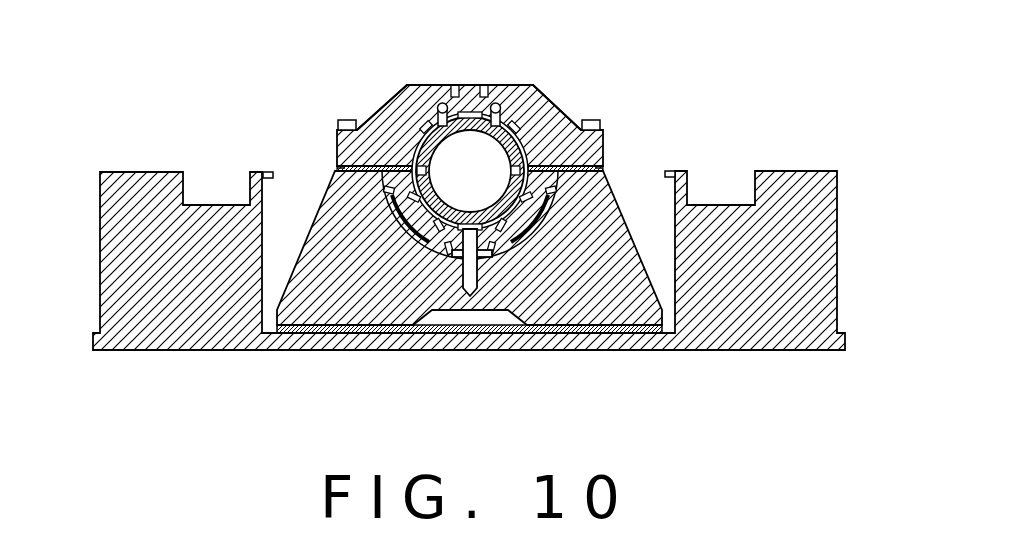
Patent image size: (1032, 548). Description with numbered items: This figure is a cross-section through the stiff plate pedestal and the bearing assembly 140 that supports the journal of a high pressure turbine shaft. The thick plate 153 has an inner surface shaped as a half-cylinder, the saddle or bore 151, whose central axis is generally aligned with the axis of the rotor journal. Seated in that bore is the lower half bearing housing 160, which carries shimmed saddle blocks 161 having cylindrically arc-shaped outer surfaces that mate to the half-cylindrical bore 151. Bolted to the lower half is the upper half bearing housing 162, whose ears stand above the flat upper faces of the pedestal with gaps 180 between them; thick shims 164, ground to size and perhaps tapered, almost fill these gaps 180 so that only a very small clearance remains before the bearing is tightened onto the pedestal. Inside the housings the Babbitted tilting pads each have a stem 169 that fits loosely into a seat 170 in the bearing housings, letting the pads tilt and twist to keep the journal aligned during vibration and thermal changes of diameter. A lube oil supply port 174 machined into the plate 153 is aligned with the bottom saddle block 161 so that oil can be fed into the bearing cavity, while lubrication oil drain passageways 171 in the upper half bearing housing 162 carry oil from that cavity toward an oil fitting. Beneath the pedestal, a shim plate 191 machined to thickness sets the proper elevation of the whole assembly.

The bearing assembly 140 is at (551, 96).
The half-cylindrical bore (saddle) 151 is at (385, 191).
The plate (stiff plate pedestal) 153 is at (590, 203).
The lower half bearing housing 160 is at (335, 173).
The saddle blocks 161 is at (405, 236).
The upper half bearing housing 162 is at (527, 112).
The shims 164 is at (335, 168).
The stem 169 is at (503, 112).
The seat 170 is at (415, 148).
The lubrication oil drain passageways 171 is at (441, 104).
The lube oil supply port 174 is at (472, 262).
The gaps 180 is at (305, 160).
The shim plate 191 is at (625, 325).